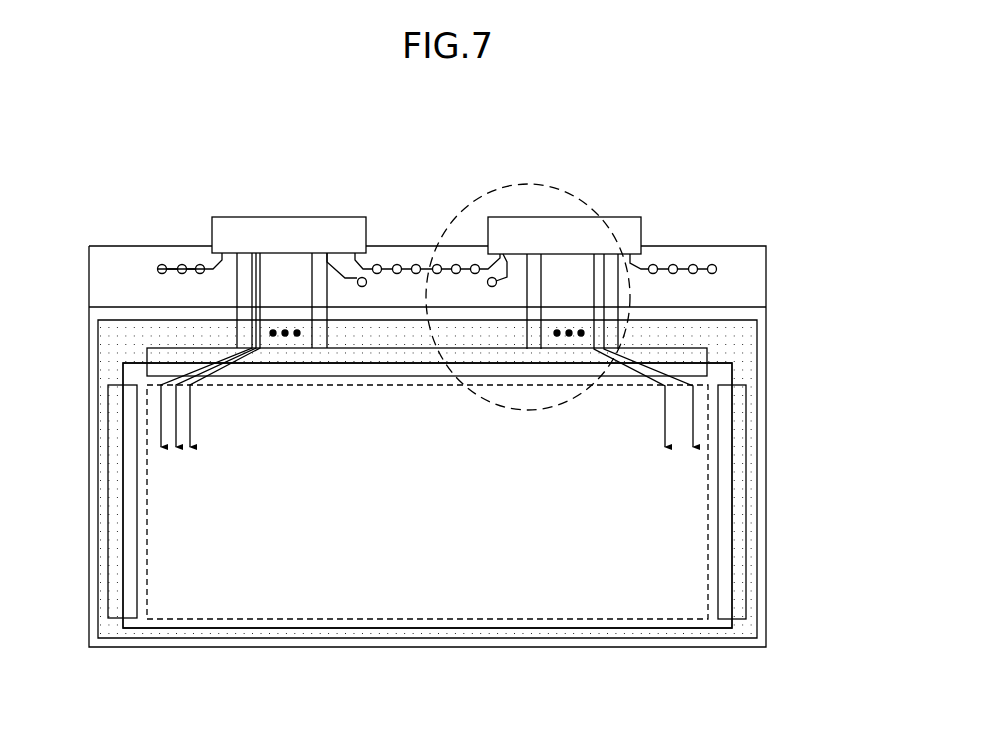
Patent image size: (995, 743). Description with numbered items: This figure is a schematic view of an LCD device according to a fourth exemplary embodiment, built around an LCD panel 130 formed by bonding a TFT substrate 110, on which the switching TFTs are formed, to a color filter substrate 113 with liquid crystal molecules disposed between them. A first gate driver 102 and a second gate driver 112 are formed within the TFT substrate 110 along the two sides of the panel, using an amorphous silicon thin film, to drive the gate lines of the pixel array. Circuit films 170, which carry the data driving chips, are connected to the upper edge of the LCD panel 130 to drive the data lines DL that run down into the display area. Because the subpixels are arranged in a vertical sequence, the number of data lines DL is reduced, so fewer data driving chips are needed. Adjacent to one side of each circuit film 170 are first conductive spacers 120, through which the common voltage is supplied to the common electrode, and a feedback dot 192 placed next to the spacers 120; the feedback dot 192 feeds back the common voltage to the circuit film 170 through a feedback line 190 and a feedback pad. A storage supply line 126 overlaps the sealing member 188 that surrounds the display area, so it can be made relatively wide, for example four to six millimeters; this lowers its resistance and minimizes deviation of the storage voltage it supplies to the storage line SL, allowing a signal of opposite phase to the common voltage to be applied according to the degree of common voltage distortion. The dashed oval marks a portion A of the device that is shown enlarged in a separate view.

The LCD panel 130 is at (482, 446).
The TFT substrate 110 is at (768, 289).
The color filter substrate 113 is at (768, 321).
The second gate driver 112 is at (748, 409).
The sealing member 188 is at (588, 639).
The first gate driver 102 is at (112, 548).
The storage supply line 126 is at (704, 357).
The circuit film 170 is at (636, 228).
The feedback line 190 is at (541, 285).
The feedback dot 192 is at (487, 283).
The first conductive spacer 120 is at (398, 264).
The data line DL is at (163, 397).
The storage line SL is at (178, 415).
The portion A is at (568, 193).